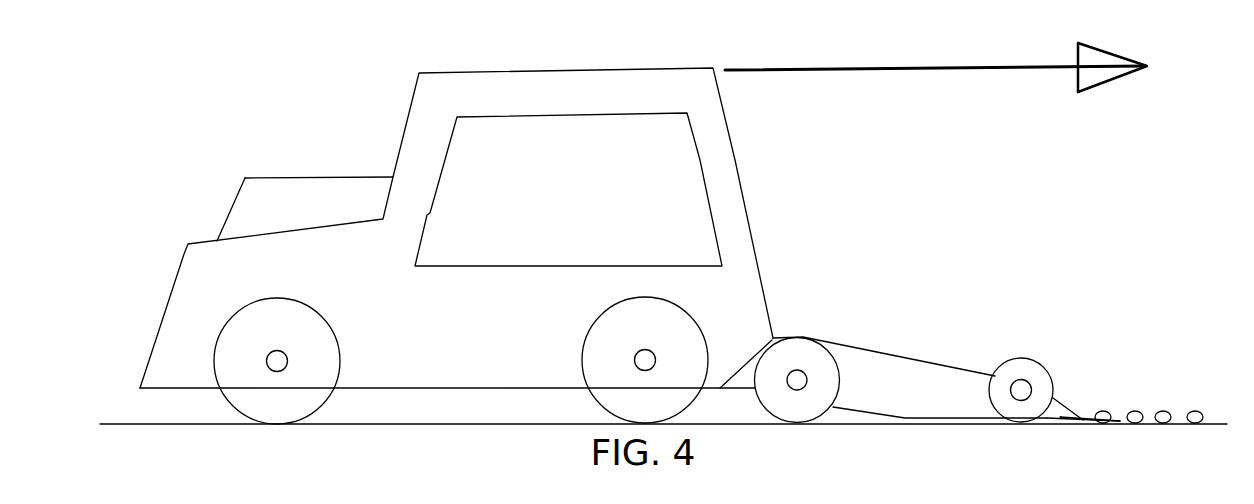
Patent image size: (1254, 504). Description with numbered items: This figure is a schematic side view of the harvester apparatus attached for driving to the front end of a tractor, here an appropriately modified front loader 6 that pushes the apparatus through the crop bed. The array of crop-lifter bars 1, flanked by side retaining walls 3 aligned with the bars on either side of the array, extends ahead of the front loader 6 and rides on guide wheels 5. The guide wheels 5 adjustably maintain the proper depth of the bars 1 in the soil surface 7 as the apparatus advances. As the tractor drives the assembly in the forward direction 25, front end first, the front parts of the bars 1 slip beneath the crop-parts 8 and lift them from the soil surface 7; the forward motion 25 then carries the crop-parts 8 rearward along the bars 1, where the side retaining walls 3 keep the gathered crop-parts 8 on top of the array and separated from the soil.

The crop-lifter bars 1 is at (1087, 418).
The side retaining walls 3 is at (905, 387).
The guide wheels 5 is at (803, 350).
The front loader 6 is at (543, 93).
The soil surface 7 is at (1223, 423).
The crop-parts 8 is at (1160, 411).
The forward motion 25 is at (895, 72).